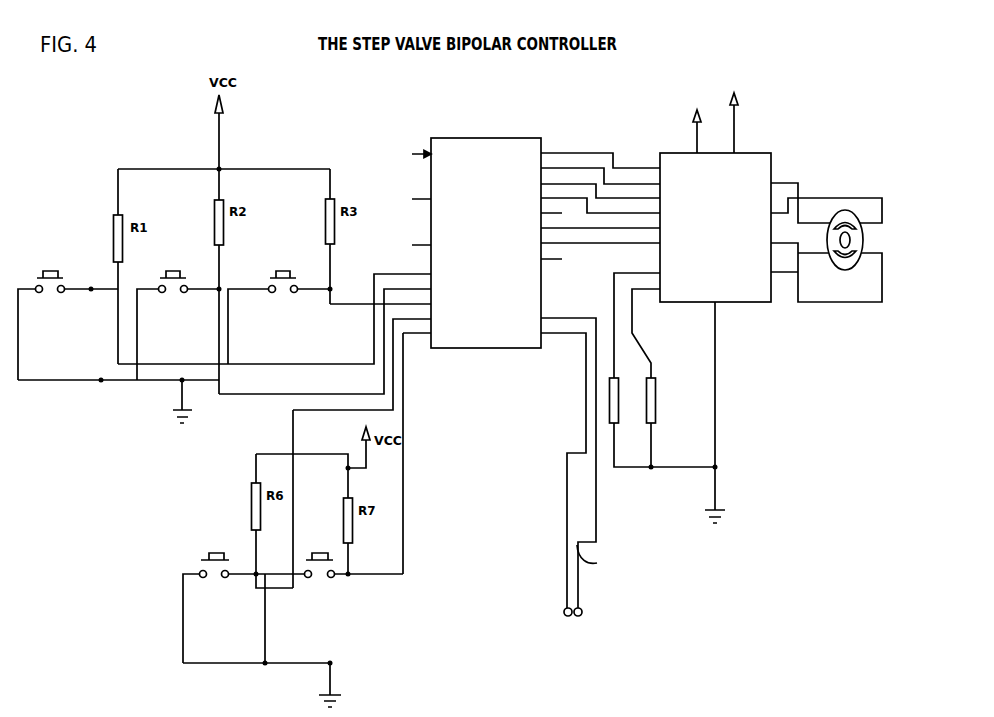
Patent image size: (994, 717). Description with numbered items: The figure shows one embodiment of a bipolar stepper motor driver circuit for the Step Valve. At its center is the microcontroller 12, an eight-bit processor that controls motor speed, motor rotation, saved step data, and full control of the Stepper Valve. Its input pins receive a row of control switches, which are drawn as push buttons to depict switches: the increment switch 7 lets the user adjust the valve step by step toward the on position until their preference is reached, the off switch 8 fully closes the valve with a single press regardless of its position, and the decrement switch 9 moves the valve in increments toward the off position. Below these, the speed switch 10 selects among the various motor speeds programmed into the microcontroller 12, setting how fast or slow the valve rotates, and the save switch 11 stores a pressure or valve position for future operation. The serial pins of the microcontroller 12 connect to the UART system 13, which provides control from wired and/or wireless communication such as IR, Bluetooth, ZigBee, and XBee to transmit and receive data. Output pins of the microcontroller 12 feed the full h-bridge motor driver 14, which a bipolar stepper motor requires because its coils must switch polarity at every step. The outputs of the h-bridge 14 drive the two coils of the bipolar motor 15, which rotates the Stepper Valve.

The increment switch 7 is at (47, 262).
The off switch 8 is at (170, 262).
The decrement switch 9 is at (277, 262).
The speed switch 10 is at (213, 550).
The save switch 11 is at (322, 550).
The microcontroller 12 is at (514, 135).
The UART system 13 is at (588, 545).
The full h-bridge motor driver 14 is at (733, 307).
The bipolar motor 15 is at (866, 238).